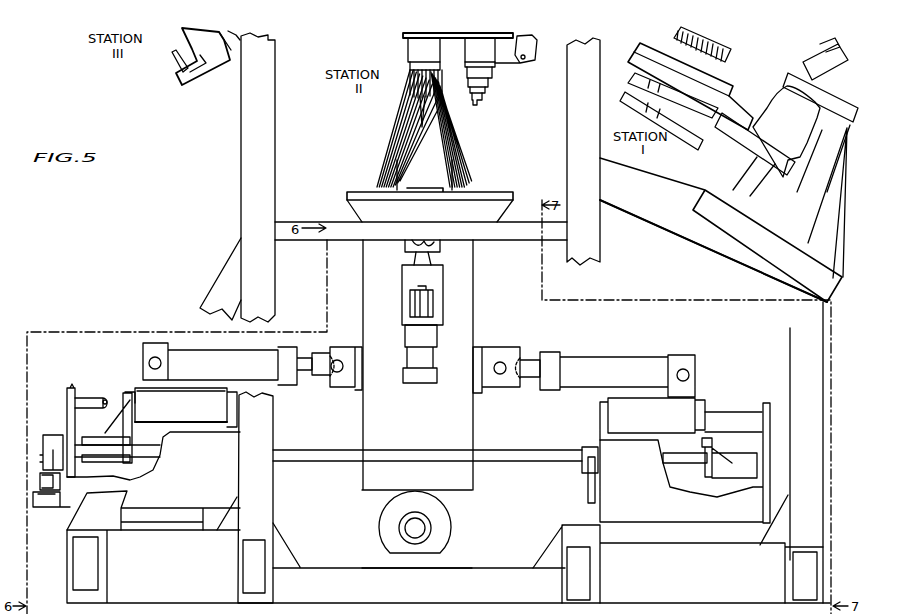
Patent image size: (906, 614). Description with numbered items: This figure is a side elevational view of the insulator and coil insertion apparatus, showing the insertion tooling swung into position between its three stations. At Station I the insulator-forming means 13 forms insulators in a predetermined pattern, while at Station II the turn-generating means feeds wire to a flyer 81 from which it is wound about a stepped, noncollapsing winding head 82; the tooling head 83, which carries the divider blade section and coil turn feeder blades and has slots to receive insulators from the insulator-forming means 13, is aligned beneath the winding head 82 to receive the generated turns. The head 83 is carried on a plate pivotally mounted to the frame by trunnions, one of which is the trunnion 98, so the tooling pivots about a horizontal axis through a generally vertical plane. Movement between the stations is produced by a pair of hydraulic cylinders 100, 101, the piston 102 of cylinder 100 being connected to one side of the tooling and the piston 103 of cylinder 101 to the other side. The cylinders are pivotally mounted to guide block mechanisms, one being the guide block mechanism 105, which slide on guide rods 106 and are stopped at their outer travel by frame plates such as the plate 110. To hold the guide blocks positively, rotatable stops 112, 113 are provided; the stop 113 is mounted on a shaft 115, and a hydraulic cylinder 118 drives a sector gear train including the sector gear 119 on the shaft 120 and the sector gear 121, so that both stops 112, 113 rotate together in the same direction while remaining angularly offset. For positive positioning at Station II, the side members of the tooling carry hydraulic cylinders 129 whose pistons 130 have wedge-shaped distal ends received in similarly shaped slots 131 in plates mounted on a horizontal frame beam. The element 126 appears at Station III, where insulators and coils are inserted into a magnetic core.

The insulator-forming means 13 is at (738, 61).
The flyer 81 is at (534, 59).
The winding head 82 is at (472, 101).
The head 83 is at (437, 165).
The trunnion 98 is at (420, 528).
The hydraulic cylinder 100 is at (268, 382).
The hydraulic cylinder 101 is at (617, 363).
The piston 102 is at (305, 381).
The piston 103 is at (533, 356).
The guide block mechanism 105 is at (678, 407).
The guide rods 106 is at (92, 404).
The plate 110 is at (72, 392).
The rotatable stop 112 is at (123, 401).
The rotatable stop 113 is at (726, 455).
The shaft 115 is at (677, 462).
The hydraulic cylinder 118 is at (50, 499).
The sector gear 119 is at (48, 434).
The shaft 120 is at (517, 451).
The sector gear 121 is at (588, 497).
The station III bracket 126 is at (180, 76).
The hydraulic cylinder 129 is at (427, 357).
The piston 130 is at (430, 257).
The slot 131 is at (408, 247).